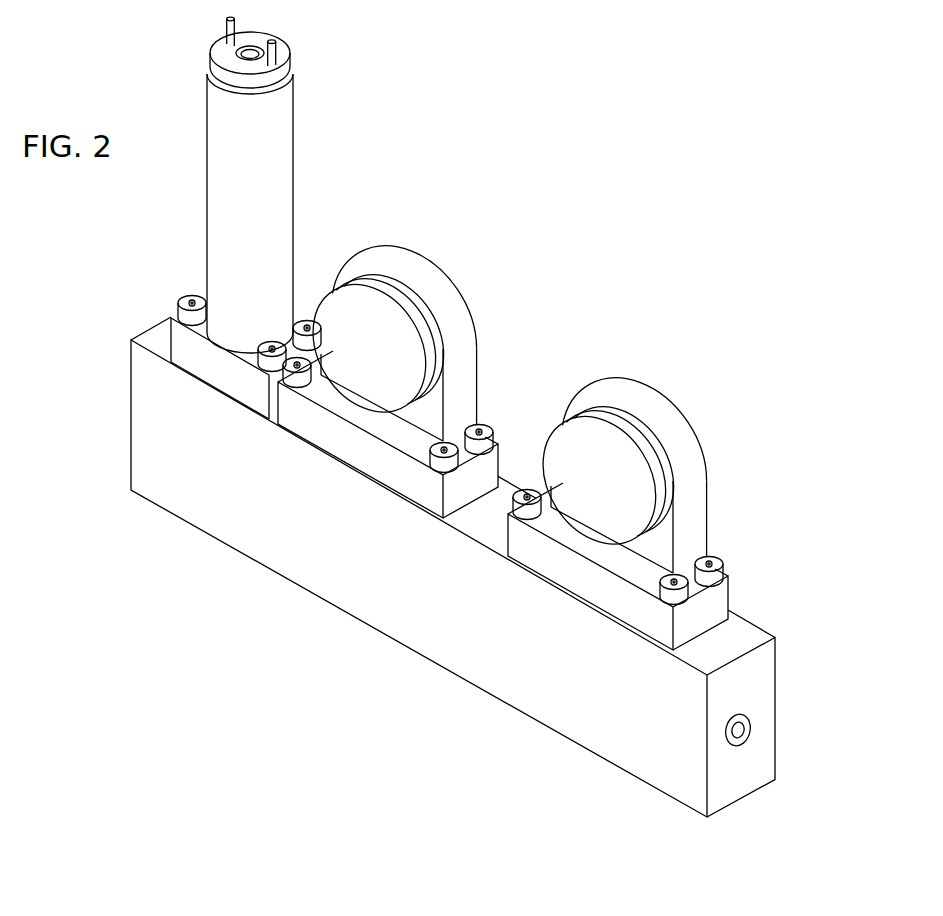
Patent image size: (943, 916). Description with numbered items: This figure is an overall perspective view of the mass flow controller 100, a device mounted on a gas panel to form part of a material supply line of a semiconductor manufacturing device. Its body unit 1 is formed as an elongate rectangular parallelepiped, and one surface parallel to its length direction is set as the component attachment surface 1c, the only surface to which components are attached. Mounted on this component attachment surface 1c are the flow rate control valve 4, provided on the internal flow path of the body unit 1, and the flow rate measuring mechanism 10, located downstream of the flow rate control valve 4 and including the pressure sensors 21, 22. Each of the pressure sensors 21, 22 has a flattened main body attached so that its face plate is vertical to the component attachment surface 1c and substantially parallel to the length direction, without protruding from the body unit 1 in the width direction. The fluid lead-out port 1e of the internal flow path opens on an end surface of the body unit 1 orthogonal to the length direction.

The mass flow controller 100 is at (536, 156).
The flow rate measuring mechanism 10 is at (608, 332).
The body unit 1 is at (352, 615).
The component attachment surface 1c is at (738, 636).
The fluid lead-out port 1e is at (746, 738).
The flow rate control valve 4 is at (212, 57).
The pressure sensor 21 is at (452, 264).
The pressure sensor 22 is at (682, 401).